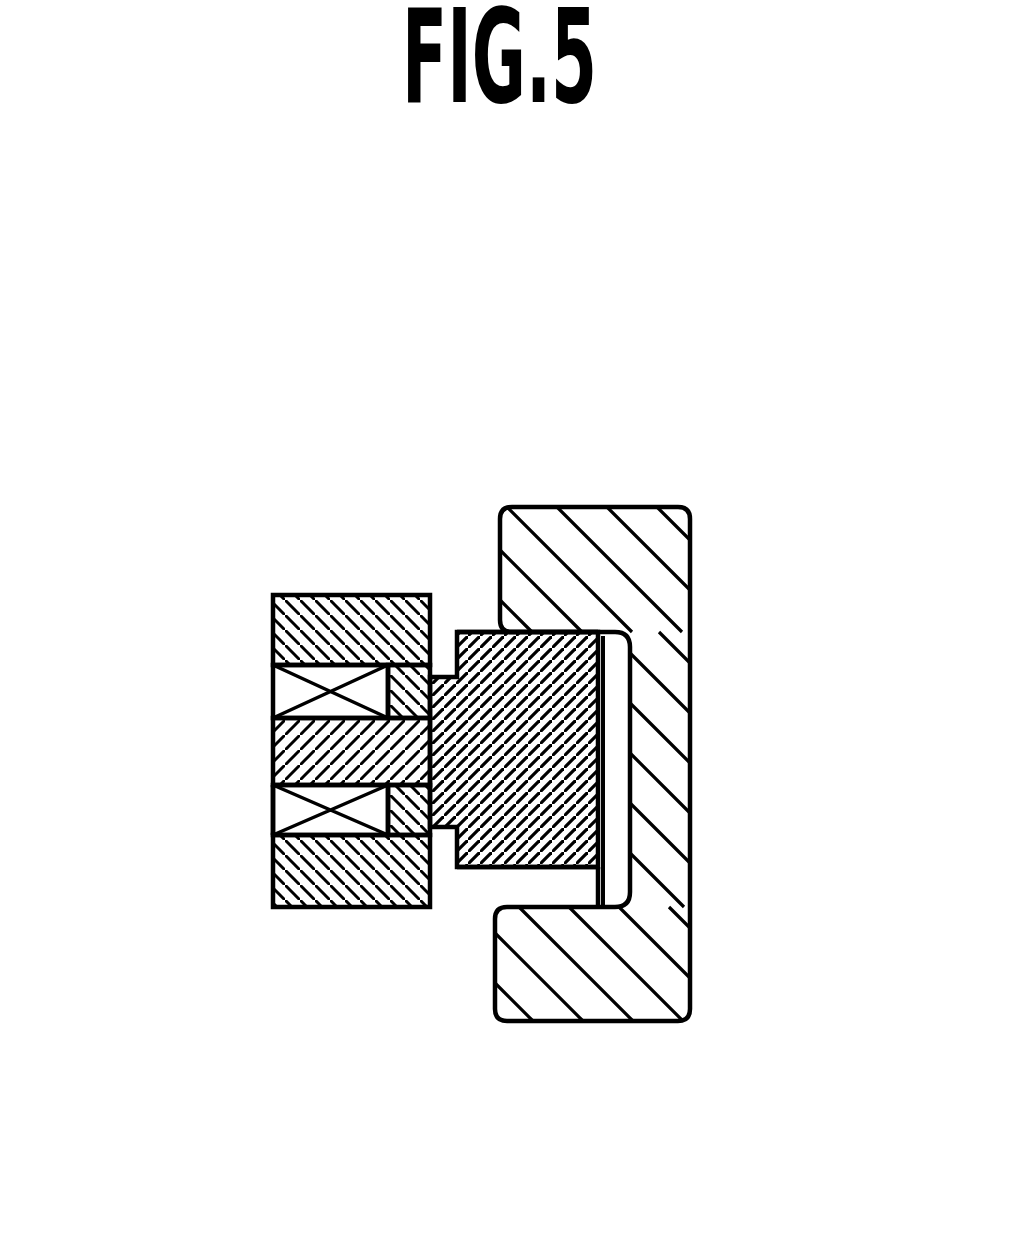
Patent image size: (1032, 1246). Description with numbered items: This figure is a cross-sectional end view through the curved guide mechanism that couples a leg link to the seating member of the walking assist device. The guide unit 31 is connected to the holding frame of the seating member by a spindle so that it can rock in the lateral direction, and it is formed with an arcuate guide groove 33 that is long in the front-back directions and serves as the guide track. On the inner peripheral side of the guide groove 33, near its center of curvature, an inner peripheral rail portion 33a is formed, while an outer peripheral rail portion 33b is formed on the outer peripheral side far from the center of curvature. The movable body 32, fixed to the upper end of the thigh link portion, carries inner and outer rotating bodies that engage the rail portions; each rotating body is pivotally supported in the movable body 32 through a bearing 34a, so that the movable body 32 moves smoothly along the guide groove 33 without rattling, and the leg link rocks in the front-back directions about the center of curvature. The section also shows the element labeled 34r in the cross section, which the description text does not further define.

The guide unit 31 is at (692, 725).
The movable body 32 is at (298, 596).
The guide groove 33 is at (607, 648).
The inner peripheral rail portion 33a is at (580, 648).
The outer peripheral rail portion 33b is at (533, 872).
The bearing 34a is at (272, 812).
The radial gap 34r is at (630, 845).